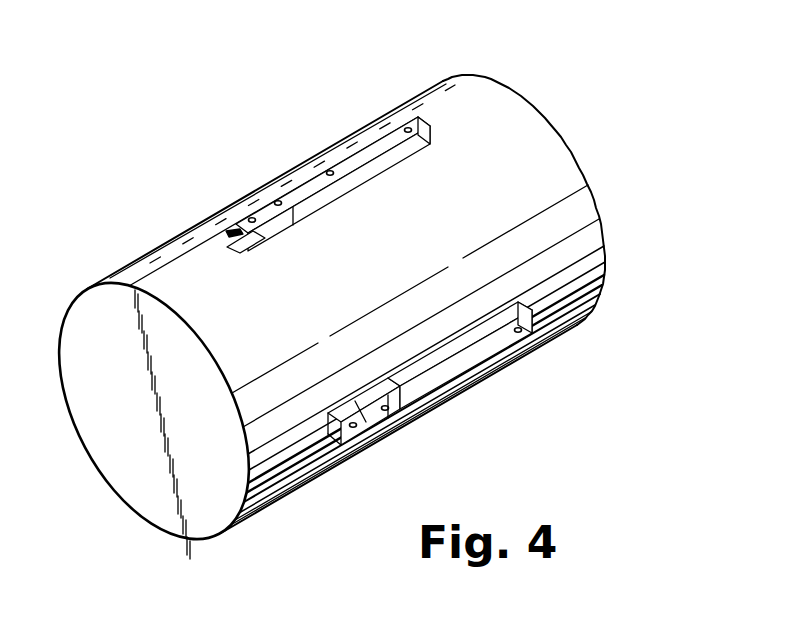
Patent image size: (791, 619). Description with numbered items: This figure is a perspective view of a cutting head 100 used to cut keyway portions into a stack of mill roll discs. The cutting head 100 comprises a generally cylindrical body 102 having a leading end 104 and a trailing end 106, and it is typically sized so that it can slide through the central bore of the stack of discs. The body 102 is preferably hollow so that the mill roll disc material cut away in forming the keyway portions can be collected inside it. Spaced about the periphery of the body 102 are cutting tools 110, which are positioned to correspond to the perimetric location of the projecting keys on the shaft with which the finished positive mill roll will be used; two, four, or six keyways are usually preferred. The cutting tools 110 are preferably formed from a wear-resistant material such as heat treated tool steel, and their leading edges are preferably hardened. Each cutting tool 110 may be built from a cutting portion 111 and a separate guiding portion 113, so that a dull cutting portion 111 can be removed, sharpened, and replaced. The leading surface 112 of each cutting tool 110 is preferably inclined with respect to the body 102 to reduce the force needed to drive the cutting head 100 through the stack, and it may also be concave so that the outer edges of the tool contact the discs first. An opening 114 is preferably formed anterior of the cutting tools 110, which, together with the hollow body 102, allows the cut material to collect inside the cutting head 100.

The cutting head 100 is at (354, 302).
The body 102 is at (570, 277).
The leading end 104 is at (137, 495).
The trailing end 106 is at (603, 231).
The cutting tool 110 is at (368, 136).
The cutting portion 111 is at (370, 420).
The leading surface 112 is at (231, 232).
The guiding portion 113 is at (477, 352).
The opening 114 is at (245, 256).